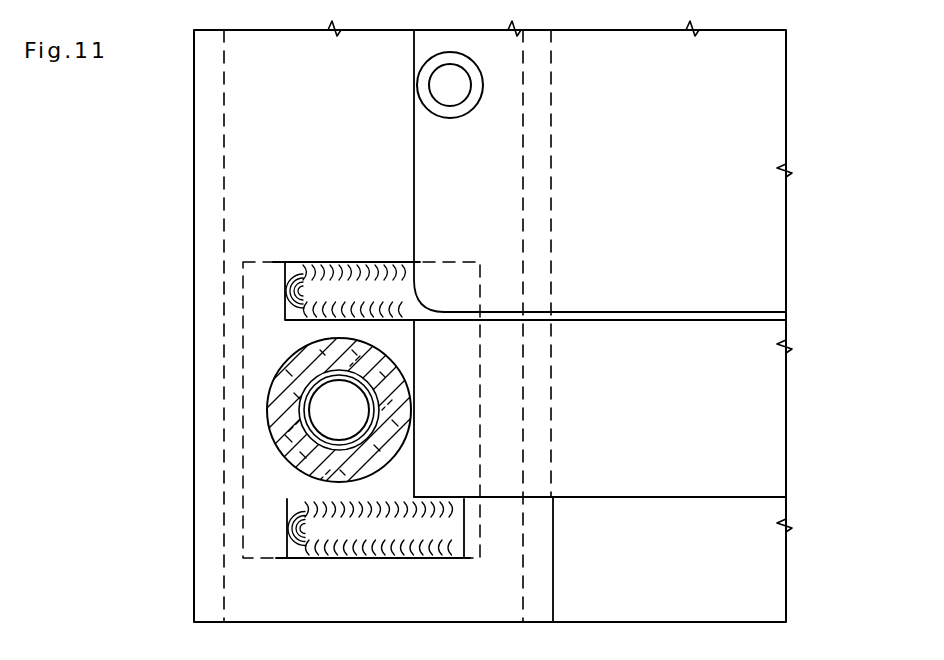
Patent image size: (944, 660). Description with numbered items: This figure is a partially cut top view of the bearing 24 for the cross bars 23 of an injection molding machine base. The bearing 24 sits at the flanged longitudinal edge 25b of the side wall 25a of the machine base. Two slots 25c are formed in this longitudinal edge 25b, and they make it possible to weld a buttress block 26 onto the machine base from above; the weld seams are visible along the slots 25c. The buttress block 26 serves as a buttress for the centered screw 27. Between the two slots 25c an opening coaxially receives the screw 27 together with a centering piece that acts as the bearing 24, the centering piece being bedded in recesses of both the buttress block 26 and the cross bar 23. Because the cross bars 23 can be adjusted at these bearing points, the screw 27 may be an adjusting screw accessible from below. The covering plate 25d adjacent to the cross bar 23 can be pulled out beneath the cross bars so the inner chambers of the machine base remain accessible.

The cross bar 23 is at (652, 450).
The bearing 24 is at (374, 468).
The side wall 25a is at (203, 350).
The flanged longitudinal edge 25b is at (305, 146).
The slot 25c is at (350, 272).
The covering plate 25d is at (662, 152).
The buttress block 26 is at (262, 490).
The screw 27 is at (352, 398).